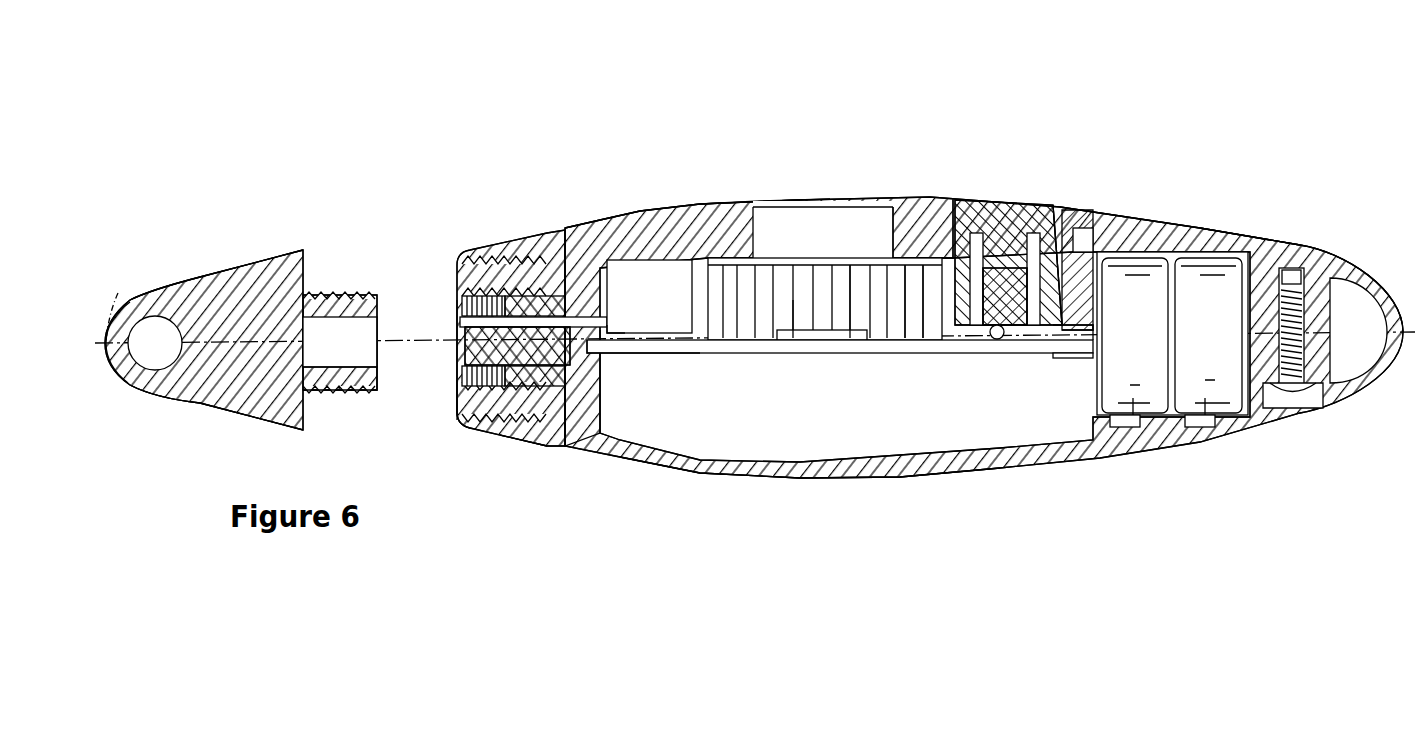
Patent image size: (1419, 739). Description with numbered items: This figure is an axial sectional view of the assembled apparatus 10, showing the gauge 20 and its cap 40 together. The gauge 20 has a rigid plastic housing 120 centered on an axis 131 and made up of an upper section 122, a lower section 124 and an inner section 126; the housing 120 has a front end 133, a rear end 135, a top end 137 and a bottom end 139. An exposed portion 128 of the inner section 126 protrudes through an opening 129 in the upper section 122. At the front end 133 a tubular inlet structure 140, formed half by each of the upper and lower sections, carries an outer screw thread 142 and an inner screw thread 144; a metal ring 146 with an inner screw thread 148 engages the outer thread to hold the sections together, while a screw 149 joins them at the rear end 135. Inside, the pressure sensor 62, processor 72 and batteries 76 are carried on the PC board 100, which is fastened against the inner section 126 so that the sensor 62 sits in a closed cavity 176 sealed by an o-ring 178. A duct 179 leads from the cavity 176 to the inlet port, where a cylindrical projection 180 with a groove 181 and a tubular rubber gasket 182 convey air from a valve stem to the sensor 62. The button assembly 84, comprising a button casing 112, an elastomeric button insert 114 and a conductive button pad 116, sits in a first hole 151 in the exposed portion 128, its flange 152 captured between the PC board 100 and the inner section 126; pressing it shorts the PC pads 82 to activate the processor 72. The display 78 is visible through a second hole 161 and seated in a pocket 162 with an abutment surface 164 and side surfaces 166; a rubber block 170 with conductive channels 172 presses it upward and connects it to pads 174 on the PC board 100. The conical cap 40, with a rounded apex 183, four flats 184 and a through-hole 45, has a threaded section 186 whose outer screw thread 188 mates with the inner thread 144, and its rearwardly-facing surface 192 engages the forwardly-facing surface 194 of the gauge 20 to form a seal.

The apparatus 10 is at (755, 311).
The gauge 20 is at (902, 326).
The cap 40 is at (249, 331).
The through-hole 45 is at (168, 312).
The electronic pressure sensor 62 is at (840, 381).
The processor 72 is at (825, 328).
The batteries 76 is at (1200, 393).
The display 78 is at (822, 257).
The electrical contacts 82 is at (993, 337).
The button assembly 84 is at (1003, 266).
The printed circuit board 100 is at (598, 342).
The button casing 112 is at (1032, 203).
The button insert 114 is at (1065, 216).
The button pad 116 is at (1023, 333).
The housing 120 is at (1178, 221).
The upper section 122 is at (1178, 212).
The lower section 124 is at (723, 477).
The inner section 126 is at (642, 228).
The exposed portion 128 is at (693, 210).
The opening 129 is at (728, 205).
The axis 131 is at (125, 307).
The front end 133 is at (455, 400).
The rear end 135 is at (1403, 347).
The top end 137 is at (948, 195).
The bottom end 139 is at (907, 480).
The tubular inlet structure 140 is at (499, 332).
The outer screw thread 142 is at (487, 247).
The inner screw thread 144 is at (500, 245).
The metal ring 146 is at (513, 240).
The inner screw thread 148 is at (545, 240).
The screw 149 is at (1277, 400).
The first hole 151 is at (956, 198).
The flange 152 is at (953, 328).
The second hole 161 is at (788, 205).
The pocket 162 is at (805, 300).
The abutment surface 164 is at (748, 268).
The side surfaces 166 is at (875, 276).
The rubber block 170 is at (842, 322).
The electrically-conductive channels 172 is at (867, 293).
The pads 174 is at (913, 322).
The closed cavity 176 is at (669, 294).
The o-ring 178 is at (598, 420).
The duct 179 is at (620, 330).
The cylindrical projection 180 is at (472, 350).
The groove 181 is at (482, 323).
The tubular rubber gasket 182 is at (533, 437).
The rounded apex 183 is at (99, 352).
The flats 184 is at (247, 272).
The threaded section 186 is at (351, 341).
The outer screw thread 188 is at (346, 291).
The annular rearwardly-facing surface 192 is at (313, 407).
The annular forwardly-facing surface 194 is at (455, 358).